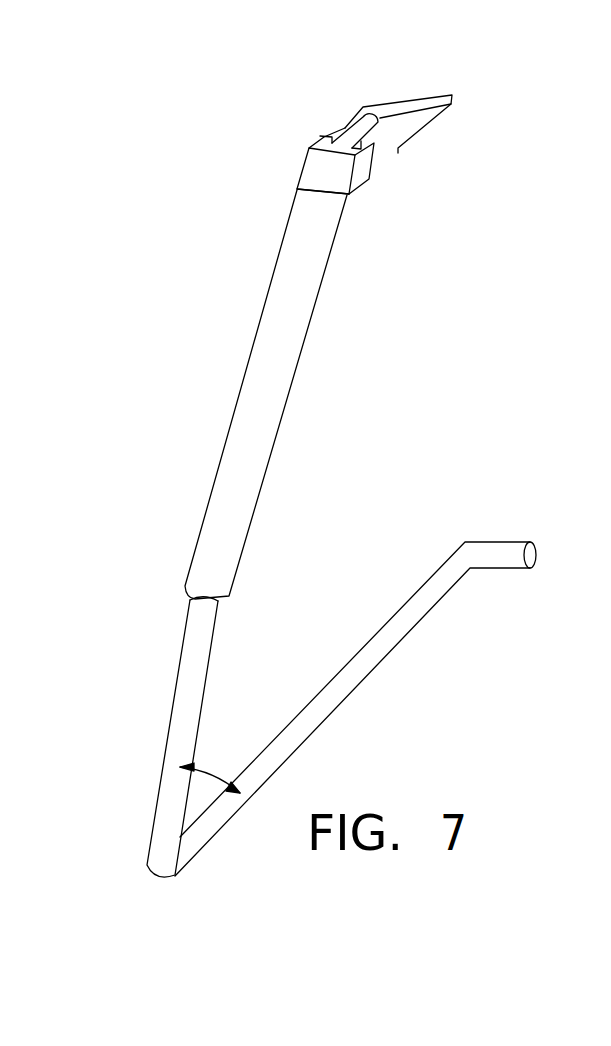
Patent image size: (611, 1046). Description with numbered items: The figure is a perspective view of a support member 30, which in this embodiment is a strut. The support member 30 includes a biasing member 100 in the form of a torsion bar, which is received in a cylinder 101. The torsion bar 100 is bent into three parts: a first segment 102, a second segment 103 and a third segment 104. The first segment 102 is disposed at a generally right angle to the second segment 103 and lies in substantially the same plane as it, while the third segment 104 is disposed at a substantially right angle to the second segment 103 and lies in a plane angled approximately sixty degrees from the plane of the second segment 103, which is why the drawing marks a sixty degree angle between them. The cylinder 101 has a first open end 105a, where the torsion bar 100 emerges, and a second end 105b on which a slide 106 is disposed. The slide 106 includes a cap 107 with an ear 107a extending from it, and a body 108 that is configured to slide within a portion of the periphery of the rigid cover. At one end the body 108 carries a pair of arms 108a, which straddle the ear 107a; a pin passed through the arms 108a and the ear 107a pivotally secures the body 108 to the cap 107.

The support member 30 is at (207, 335).
The biasing member 100 is at (173, 733).
The cylinder 101 is at (303, 245).
The first segment 102 is at (508, 552).
The second segment 103 is at (340, 687).
The third segment 104 is at (190, 670).
The first open end 105a is at (227, 596).
The second end 105b is at (333, 197).
The slide 106 is at (455, 125).
The cap 107 is at (318, 168).
The ear 107a is at (358, 130).
The body 108 is at (421, 108).
The arms 108a is at (345, 147).